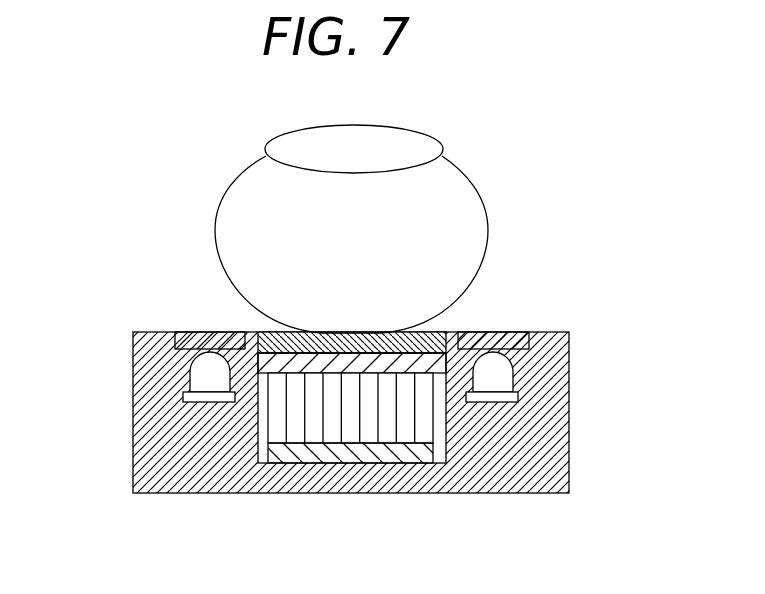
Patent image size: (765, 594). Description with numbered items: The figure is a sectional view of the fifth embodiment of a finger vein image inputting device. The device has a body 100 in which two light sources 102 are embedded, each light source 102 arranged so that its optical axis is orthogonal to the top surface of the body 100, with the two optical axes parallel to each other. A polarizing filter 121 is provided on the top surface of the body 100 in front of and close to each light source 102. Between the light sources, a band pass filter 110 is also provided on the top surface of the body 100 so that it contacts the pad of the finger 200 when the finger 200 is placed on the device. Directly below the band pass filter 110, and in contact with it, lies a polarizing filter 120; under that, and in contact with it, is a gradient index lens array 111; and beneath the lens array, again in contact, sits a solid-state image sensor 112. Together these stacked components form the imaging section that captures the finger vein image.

The body 100 is at (553, 458).
The light source 102 is at (200, 378).
The band pass filter 110 is at (425, 353).
The gradient index lens array 111 is at (353, 415).
The solid-state image sensor 112 is at (317, 453).
The polarizing filter 120 is at (261, 334).
The polarizing filter 121 is at (200, 341).
The finger 200 is at (256, 175).